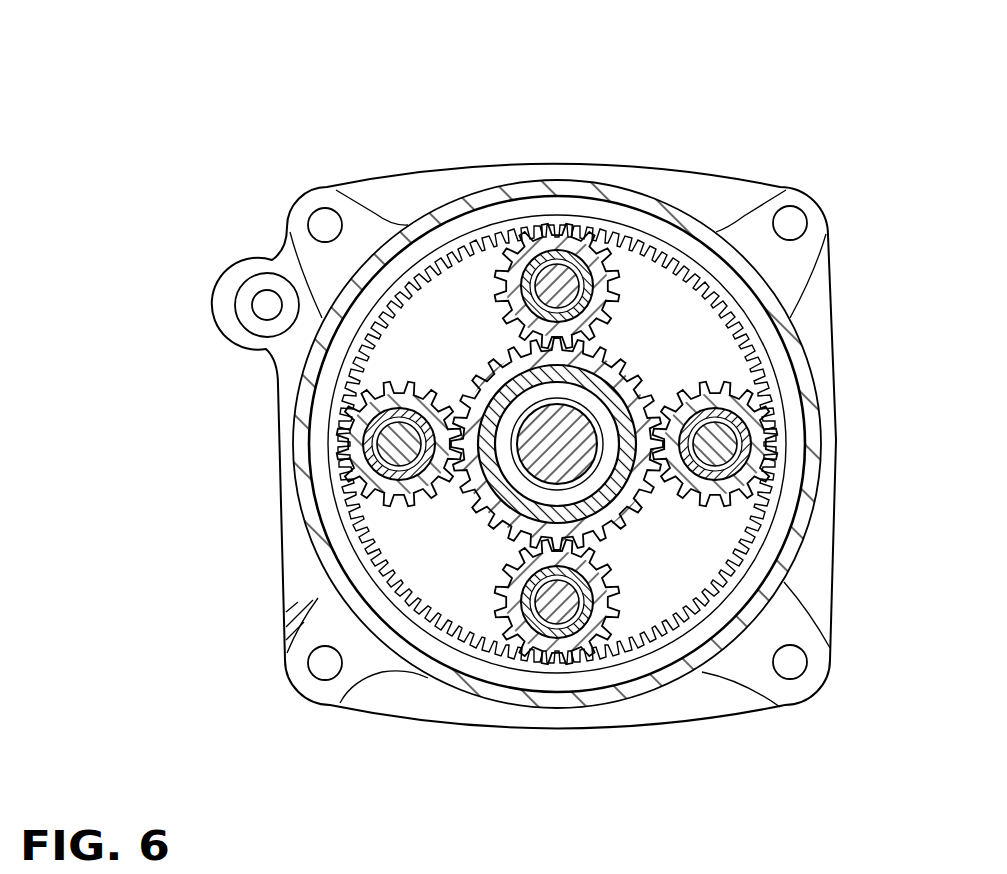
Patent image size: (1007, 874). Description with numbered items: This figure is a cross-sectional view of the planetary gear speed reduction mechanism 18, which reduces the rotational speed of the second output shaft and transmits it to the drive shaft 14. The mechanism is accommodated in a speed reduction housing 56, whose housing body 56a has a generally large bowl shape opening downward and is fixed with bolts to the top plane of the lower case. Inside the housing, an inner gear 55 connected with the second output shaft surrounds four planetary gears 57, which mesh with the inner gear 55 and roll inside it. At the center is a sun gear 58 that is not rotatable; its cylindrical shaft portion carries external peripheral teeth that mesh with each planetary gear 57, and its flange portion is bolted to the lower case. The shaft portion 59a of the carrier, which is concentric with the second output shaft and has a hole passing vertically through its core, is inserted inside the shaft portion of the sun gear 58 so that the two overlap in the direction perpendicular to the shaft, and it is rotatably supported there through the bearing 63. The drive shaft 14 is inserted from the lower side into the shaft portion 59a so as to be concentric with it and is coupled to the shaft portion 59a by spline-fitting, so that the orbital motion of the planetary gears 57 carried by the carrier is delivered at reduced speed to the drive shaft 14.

The planetary gear speed reduction mechanism 18 is at (326, 148).
The inner gear 55 is at (509, 230).
The speed reduction housing 56 is at (722, 179).
The housing body 56a is at (680, 228).
The planetary gear 57 is at (624, 240).
The sun gear 58 is at (636, 359).
The shaft portion 59a is at (612, 507).
The bearing 63 is at (487, 373).
The drive shaft 14 is at (513, 520).